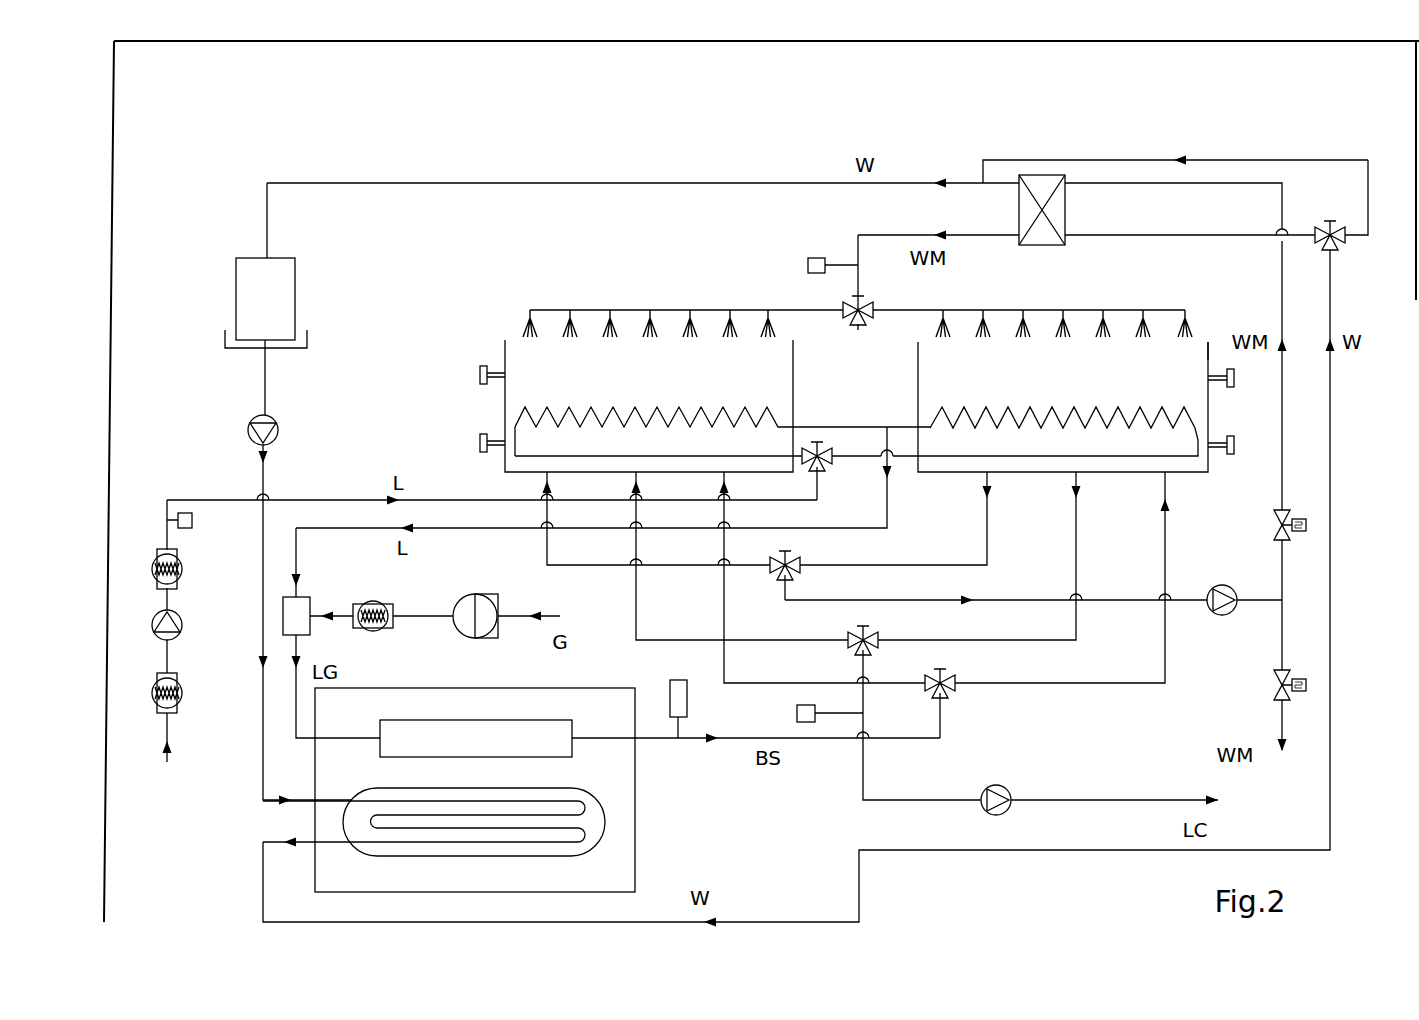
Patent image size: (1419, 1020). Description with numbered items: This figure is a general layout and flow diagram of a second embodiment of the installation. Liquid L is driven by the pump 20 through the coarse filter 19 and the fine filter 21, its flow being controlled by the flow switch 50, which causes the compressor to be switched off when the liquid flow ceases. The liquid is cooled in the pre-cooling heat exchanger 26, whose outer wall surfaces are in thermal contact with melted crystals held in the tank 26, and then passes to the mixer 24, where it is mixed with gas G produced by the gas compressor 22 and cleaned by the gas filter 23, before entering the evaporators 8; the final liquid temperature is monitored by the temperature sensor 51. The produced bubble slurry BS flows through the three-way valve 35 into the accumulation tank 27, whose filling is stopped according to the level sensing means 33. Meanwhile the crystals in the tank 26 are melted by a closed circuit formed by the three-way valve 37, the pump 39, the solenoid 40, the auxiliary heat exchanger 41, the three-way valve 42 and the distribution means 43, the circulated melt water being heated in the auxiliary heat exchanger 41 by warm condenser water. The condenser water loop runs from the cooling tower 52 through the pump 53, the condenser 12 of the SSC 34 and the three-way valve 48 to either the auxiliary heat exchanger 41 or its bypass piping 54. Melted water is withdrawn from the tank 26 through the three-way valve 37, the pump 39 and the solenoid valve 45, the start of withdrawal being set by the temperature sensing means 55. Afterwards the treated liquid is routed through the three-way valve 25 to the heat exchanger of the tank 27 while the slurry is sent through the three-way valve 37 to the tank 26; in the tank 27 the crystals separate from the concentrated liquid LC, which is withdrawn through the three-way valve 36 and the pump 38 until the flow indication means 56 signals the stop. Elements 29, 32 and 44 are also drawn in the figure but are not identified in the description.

The evaporator 8 is at (464, 735).
The condenser 12 is at (434, 809).
The coarse filter 19 is at (180, 697).
The pump 20 is at (182, 634).
The fine filter 21 is at (180, 574).
The gas compressor 22 is at (481, 612).
The gas filter 23 is at (392, 610).
The mixer 24 is at (302, 614).
The three-way valve 25 is at (822, 468).
The pre-cooling heat exchanger 26 is at (705, 406).
The accumulation tank 27 is at (1063, 407).
The overflow 29 is at (1213, 347).
The sensor 32 is at (1232, 450).
The level sensing means 33 is at (1232, 382).
The SSC 34 is at (405, 688).
The three-way valve 35 is at (952, 690).
The three-way valve 36 is at (882, 645).
The three-way valve 37 is at (800, 565).
The pump 38 is at (1012, 793).
The pump 39 is at (1220, 598).
The solenoid valve 40 is at (1287, 516).
The auxiliary heat exchanger 41 is at (1057, 215).
The three-way valve 42 is at (845, 303).
The distribution means 43 is at (574, 320).
The spray nozzles 44 is at (1064, 326).
The solenoid valve 45 is at (1275, 673).
The three-way valve 48 is at (1333, 252).
The flow switch 50 is at (196, 537).
The temperature sensor 51 is at (678, 697).
The cooling tower 52 is at (282, 314).
The pump 53 is at (280, 432).
The bypass piping 54 is at (1245, 160).
The temperature sensing means 55 is at (808, 264).
The flow indication means 56 is at (797, 713).